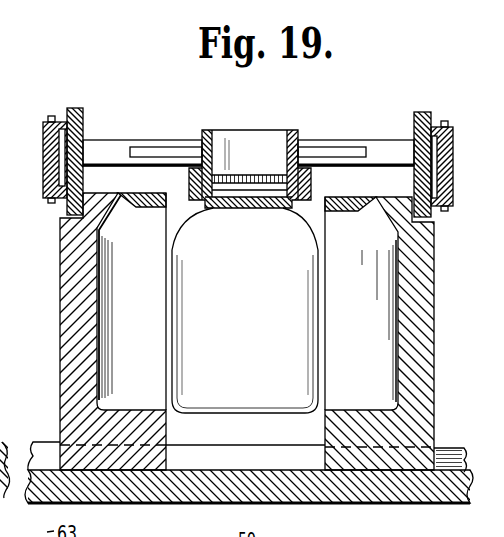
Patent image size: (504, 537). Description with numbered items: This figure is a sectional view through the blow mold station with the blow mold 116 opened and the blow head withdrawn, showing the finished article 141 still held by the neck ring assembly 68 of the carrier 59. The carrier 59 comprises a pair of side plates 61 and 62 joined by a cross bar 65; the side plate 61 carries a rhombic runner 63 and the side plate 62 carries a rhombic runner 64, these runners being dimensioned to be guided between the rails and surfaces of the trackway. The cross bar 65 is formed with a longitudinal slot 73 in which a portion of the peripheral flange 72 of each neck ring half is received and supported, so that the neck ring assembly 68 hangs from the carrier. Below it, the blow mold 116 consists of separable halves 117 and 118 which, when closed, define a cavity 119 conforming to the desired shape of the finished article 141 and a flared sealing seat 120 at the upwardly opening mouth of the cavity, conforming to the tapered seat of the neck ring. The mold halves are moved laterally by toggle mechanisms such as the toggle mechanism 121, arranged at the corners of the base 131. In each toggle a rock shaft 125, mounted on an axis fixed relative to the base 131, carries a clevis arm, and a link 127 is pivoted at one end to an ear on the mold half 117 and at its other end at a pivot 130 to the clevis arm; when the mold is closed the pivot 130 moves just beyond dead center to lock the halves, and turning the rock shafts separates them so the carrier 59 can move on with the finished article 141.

The carrier 59 is at (252, 268).
The side plate 61 is at (416, 113).
The side plate 62 is at (81, 110).
The rhombic runner 63 is at (454, 149).
The rhombic runner 64 is at (43, 150).
The cross bar 65 is at (373, 151).
The neck ring assembly 68 is at (308, 180).
The peripheral flange 72 is at (319, 147).
The longitudinal slot 73 is at (172, 147).
The blow mold 116 is at (252, 268).
The mold half 117 is at (62, 238).
The mold half 118 is at (426, 291).
The cavity 119 is at (396, 336).
The flared sealing seat 120 is at (128, 198).
The toggle mechanism 121 is at (19, 274).
The rock shaft 125 is at (0, 360).
The link 127 is at (20, 278).
The pivot 130 is at (0, 321).
The base 131 is at (443, 448).
The finished article 141 is at (252, 326).